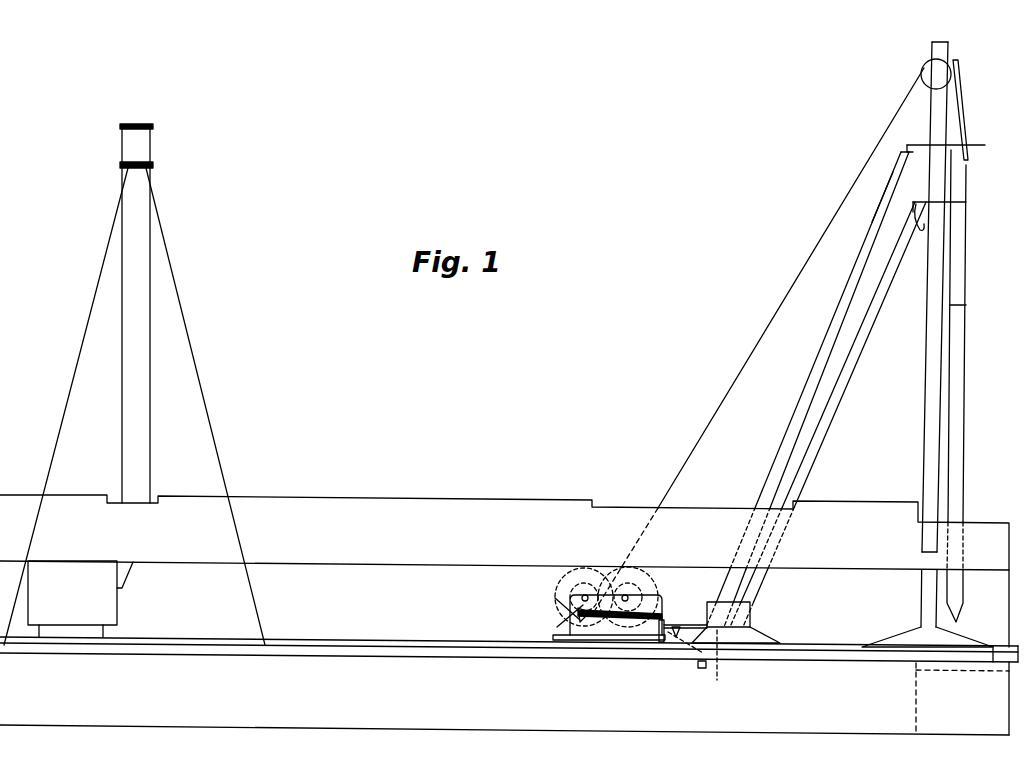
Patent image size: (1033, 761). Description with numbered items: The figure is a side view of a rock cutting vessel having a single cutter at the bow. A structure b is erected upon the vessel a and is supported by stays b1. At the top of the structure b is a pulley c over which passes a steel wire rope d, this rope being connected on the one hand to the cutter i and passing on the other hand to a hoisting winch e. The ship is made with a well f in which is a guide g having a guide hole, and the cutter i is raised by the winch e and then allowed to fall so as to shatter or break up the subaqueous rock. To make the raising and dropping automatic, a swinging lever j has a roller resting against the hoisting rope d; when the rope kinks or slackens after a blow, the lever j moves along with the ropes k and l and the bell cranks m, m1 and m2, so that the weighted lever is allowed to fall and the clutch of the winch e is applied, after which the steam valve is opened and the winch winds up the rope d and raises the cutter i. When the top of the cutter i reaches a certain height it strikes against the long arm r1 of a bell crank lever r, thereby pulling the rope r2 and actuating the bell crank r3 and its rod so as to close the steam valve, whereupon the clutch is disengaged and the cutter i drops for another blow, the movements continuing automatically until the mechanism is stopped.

The vessel a is at (504, 698).
The structure b is at (930, 406).
The stays b1 is at (828, 393).
The pulley c is at (926, 70).
The steel wire rope d is at (800, 265).
The hoisting winch e is at (593, 598).
The well f is at (918, 712).
The guide g is at (955, 672).
The cutter i is at (953, 340).
The swinging lever j is at (962, 118).
The rope k is at (957, 148).
The rope l is at (893, 204).
The bell crank m is at (912, 147).
The bell crank m1 is at (717, 675).
The bell crank m2 is at (667, 622).
The bell crank lever r is at (918, 208).
The long arm r1 is at (965, 208).
The rope r2 is at (822, 445).
The bell crank r3 is at (755, 625).